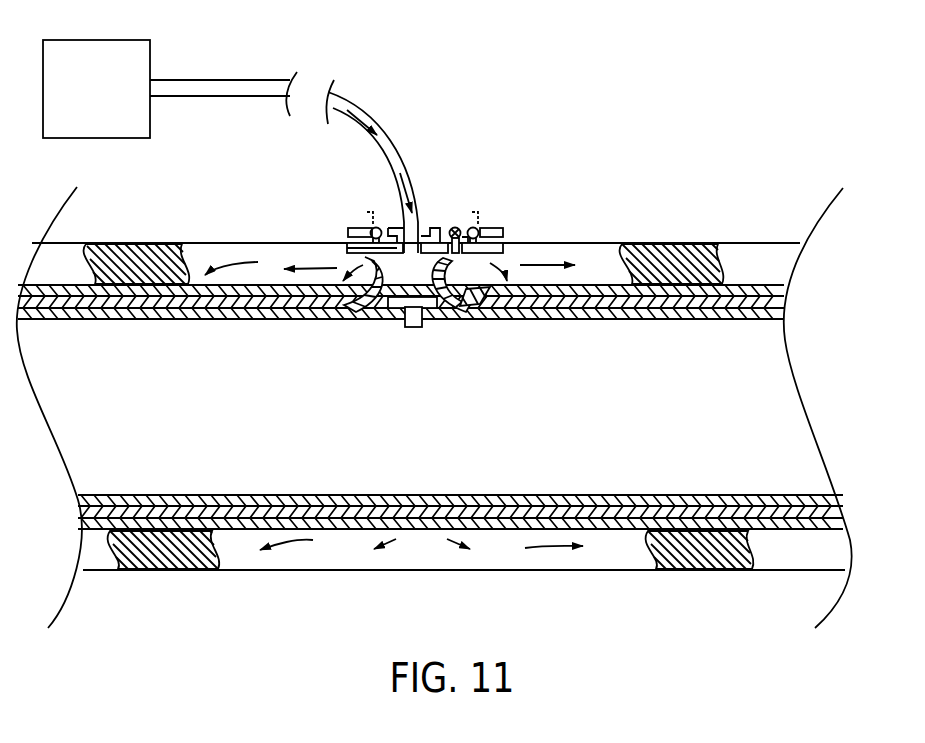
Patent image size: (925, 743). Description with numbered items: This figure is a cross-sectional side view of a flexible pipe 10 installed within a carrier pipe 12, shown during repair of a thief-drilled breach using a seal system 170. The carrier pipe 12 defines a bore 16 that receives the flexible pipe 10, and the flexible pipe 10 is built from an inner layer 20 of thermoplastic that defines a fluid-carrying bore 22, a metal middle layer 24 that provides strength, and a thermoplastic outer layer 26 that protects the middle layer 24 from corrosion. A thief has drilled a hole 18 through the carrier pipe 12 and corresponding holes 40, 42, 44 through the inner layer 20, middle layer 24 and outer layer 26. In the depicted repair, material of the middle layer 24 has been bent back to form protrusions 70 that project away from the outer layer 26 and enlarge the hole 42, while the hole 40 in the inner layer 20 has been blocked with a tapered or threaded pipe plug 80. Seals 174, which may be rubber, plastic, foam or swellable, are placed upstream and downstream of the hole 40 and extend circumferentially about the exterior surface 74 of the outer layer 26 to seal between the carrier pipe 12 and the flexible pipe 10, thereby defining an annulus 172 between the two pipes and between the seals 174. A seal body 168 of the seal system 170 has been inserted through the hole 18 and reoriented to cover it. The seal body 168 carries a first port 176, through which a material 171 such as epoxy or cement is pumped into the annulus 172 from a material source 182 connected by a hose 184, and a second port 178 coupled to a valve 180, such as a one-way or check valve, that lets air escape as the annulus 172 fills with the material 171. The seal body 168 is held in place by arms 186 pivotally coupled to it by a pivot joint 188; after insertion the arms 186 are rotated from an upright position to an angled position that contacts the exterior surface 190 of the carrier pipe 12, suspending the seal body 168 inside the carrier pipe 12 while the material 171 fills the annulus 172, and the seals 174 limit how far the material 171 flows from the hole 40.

The flexible pipe 10 is at (838, 434).
The carrier pipe 12 is at (200, 243).
The bore 16 is at (771, 562).
The hole 18 is at (515, 173).
The inner layer 20 is at (672, 318).
The bore 22 is at (175, 404).
The middle layer 24 is at (757, 319).
The outer layer 26 is at (762, 285).
The hole 40 is at (402, 310).
The hole 42 is at (447, 310).
The hole 44 is at (490, 284).
The protrusions 70 is at (346, 286).
The exterior surface 74 is at (225, 287).
The pipe plug 80 is at (413, 327).
The seal body 168 is at (508, 243).
The seal system 170 is at (537, 108).
The material 171 is at (362, 117).
The annulus 172 is at (420, 546).
The seals 174 is at (133, 256).
The first port 176 is at (345, 243).
The second port 178 is at (443, 233).
The valve 180 is at (455, 227).
The material source 182 is at (107, 40).
The hose 184 is at (242, 80).
The arms 186 is at (363, 227).
The pivot joint 188 is at (386, 222).
The exterior surface 190 is at (597, 242).